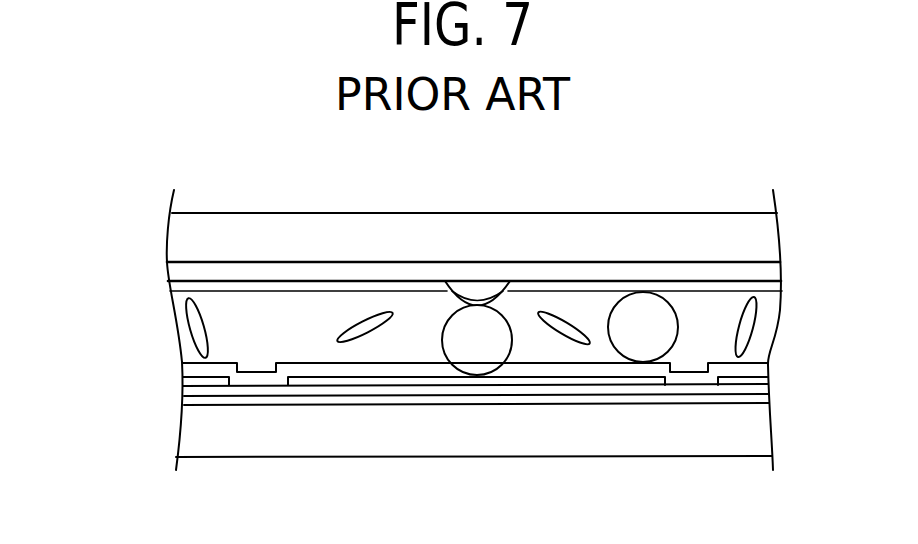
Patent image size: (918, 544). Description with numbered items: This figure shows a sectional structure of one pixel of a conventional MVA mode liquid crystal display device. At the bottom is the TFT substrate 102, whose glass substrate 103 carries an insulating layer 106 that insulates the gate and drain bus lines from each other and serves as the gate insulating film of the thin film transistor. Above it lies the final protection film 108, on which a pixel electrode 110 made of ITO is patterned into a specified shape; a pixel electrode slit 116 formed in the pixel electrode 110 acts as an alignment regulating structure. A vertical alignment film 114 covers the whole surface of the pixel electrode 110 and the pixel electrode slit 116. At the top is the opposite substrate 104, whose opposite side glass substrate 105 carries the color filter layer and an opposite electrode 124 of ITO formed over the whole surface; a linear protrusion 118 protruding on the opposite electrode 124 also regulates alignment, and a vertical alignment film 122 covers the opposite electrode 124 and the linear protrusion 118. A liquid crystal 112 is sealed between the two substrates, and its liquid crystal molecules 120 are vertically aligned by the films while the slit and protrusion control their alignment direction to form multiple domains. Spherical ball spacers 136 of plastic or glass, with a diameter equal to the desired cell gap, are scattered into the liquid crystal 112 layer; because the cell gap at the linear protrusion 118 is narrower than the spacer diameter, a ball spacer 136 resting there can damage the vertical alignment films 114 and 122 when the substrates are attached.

The TFT substrate 102 is at (161, 438).
The glass substrate 103 is at (745, 437).
The opposite substrate 104 is at (141, 221).
The opposite side glass substrate 105 is at (747, 247).
The insulating layer 106 is at (768, 402).
The final protection film 108 is at (768, 391).
The pixel electrode 110 is at (213, 380).
The liquid crystal 112 is at (418, 340).
The vertical alignment film 114 is at (760, 365).
The pixel electrode slit 116 is at (253, 345).
The linear protrusion 118 is at (477, 296).
The liquid crystal molecule 120 is at (197, 328).
The vertical alignment film 122 is at (166, 283).
The opposite electrode 124 is at (165, 262).
The ball spacer 136 is at (497, 357).